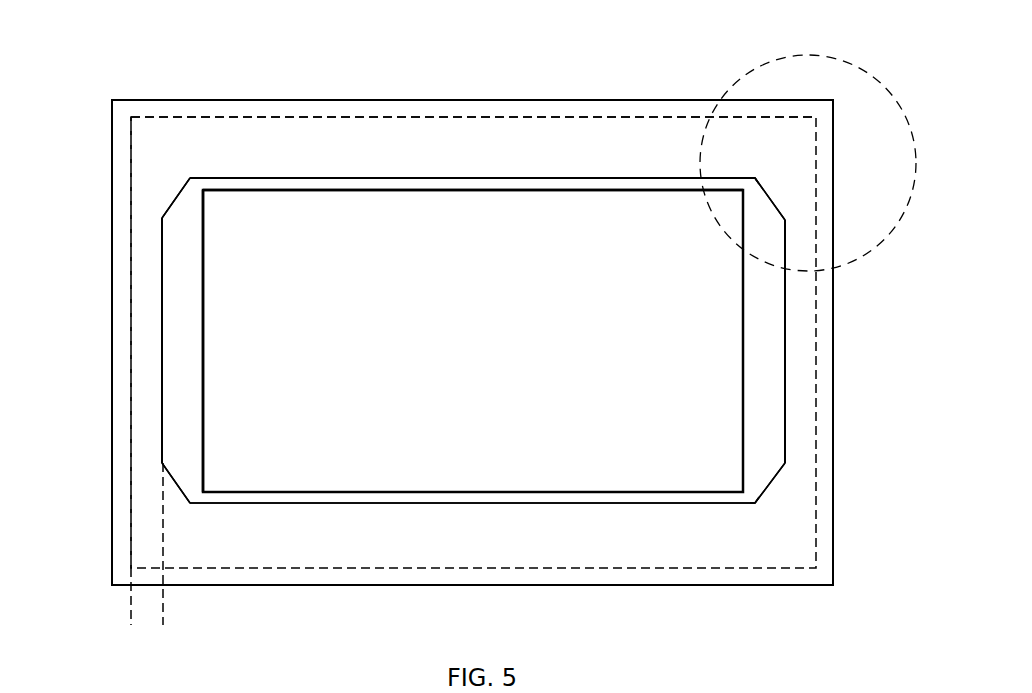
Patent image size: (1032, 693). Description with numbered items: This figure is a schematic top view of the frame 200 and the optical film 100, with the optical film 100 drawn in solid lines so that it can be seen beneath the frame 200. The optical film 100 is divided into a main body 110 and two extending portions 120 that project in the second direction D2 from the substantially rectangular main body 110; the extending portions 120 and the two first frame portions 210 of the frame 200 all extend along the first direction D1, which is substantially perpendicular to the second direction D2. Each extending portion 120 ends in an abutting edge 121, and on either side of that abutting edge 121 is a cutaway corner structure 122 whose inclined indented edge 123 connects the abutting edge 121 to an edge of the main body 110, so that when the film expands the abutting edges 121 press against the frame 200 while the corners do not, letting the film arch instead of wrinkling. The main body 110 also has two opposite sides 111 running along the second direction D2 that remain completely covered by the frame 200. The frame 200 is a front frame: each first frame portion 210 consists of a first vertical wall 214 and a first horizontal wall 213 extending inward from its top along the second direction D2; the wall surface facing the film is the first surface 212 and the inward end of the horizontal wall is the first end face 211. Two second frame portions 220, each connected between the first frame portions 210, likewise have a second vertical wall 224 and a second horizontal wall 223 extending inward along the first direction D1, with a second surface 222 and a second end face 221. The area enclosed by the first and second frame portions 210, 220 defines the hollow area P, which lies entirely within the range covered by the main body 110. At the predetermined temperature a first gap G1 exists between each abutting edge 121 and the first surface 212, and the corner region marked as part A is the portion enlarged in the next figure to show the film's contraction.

The optical film 100 is at (474, 460).
The main body 110 is at (613, 460).
The sides 111 is at (316, 177).
The extending portions 120 is at (763, 385).
The abutting edge 121 is at (784, 342).
The cutaway corner structures 122 is at (797, 170).
The indented edge 123 is at (783, 205).
The frame 200 is at (252, 155).
The first frame portions 210 is at (262, 220).
The first end face 211 is at (203, 342).
The first surface 212 is at (131, 316).
The first horizontal wall 213 is at (152, 175).
The first vertical wall 214 is at (125, 263).
The second frame portions 220 is at (472, 62).
The second end face 221 is at (473, 190).
The second surface 222 is at (400, 117).
The second horizontal wall 223 is at (512, 148).
The second vertical wall 224 is at (565, 112).
The hollow area P is at (758, 161).
The part A is at (886, 232).
The first direction D1 is at (60, 624).
The second direction D2 is at (53, 658).
The first gap G1 is at (92, 625).